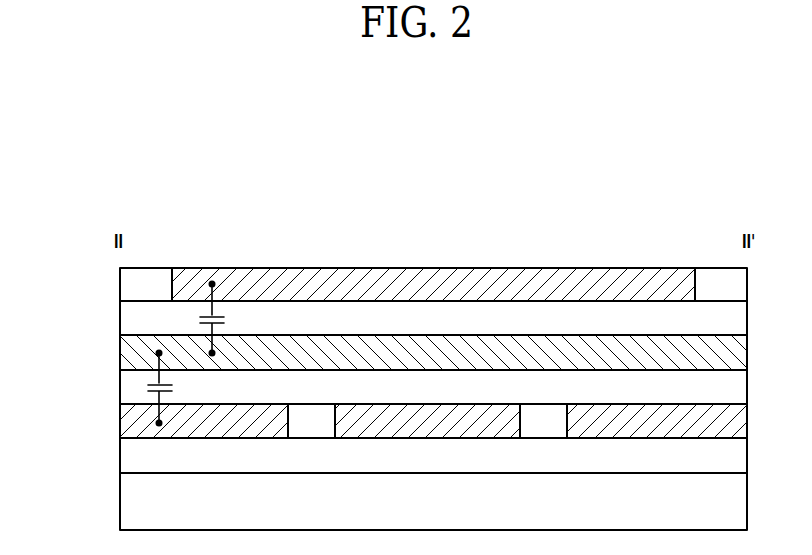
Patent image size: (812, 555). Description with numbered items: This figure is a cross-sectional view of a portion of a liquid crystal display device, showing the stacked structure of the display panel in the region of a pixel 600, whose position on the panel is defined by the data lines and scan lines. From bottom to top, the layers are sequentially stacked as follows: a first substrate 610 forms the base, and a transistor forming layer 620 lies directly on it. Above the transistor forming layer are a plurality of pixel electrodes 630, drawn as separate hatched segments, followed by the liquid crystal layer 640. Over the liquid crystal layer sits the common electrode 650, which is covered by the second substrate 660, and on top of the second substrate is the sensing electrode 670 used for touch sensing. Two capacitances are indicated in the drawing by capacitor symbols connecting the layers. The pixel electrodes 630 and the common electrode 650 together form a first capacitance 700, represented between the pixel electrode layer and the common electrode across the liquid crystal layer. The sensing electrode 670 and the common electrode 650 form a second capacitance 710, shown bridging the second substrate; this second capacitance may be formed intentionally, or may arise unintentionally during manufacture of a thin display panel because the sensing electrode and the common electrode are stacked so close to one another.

The pixel 600 is at (485, 221).
The first substrate 610 is at (738, 502).
The transistor forming layer 620 is at (738, 458).
The pixel electrodes 630 is at (738, 428).
The liquid crystal layer 640 is at (738, 388).
The common electrode 650 is at (738, 355).
The second substrate 660 is at (738, 317).
The sensing electrode 670 is at (738, 285).
The first capacitance 700 is at (148, 388).
The second capacitance 710 is at (199, 316).